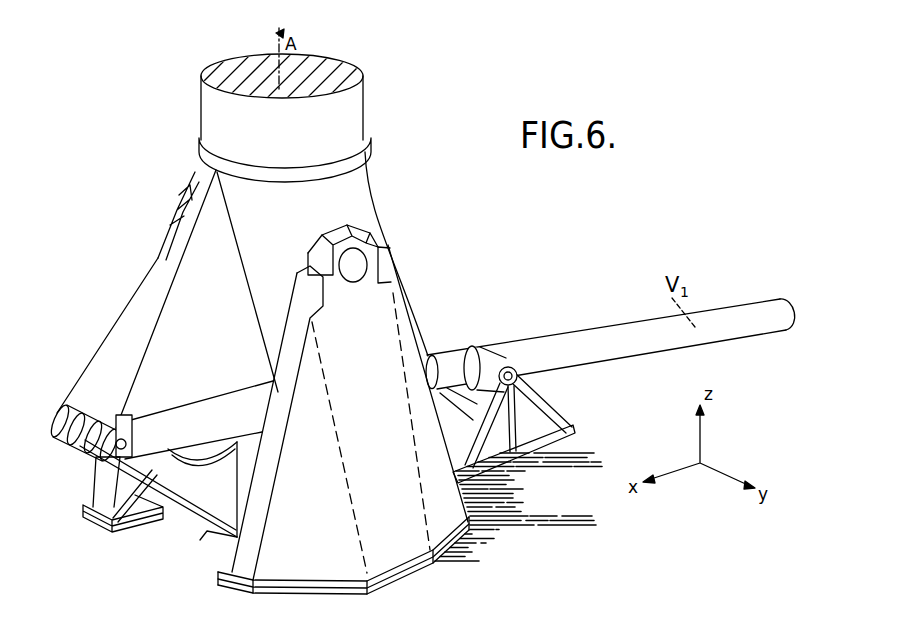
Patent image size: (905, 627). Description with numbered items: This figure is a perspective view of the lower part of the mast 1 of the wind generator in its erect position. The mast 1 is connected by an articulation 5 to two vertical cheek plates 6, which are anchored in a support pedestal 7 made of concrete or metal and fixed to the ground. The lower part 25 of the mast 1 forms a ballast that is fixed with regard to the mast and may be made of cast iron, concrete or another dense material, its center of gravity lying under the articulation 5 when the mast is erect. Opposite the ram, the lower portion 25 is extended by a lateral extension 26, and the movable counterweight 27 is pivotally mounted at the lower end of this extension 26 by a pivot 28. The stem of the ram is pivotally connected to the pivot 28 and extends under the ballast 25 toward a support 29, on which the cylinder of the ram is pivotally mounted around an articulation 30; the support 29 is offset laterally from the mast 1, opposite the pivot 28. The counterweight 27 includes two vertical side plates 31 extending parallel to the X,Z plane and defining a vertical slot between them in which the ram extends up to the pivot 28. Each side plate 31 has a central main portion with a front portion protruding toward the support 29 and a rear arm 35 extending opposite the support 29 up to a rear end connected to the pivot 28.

The mast 1 is at (318, 78).
The lower part of the mast 25 is at (332, 207).
The lateral extension 26 is at (148, 295).
The pivot 28 is at (115, 437).
The vertical side plates 31 is at (188, 506).
The movable counterweight 27 is at (207, 533).
The rear arm 35 is at (92, 513).
The vertical cheek plates 6 is at (105, 485).
The articulation 5 is at (360, 262).
The support 29 is at (525, 410).
The articulation 30 is at (510, 370).
The support pedestal 7 is at (521, 523).